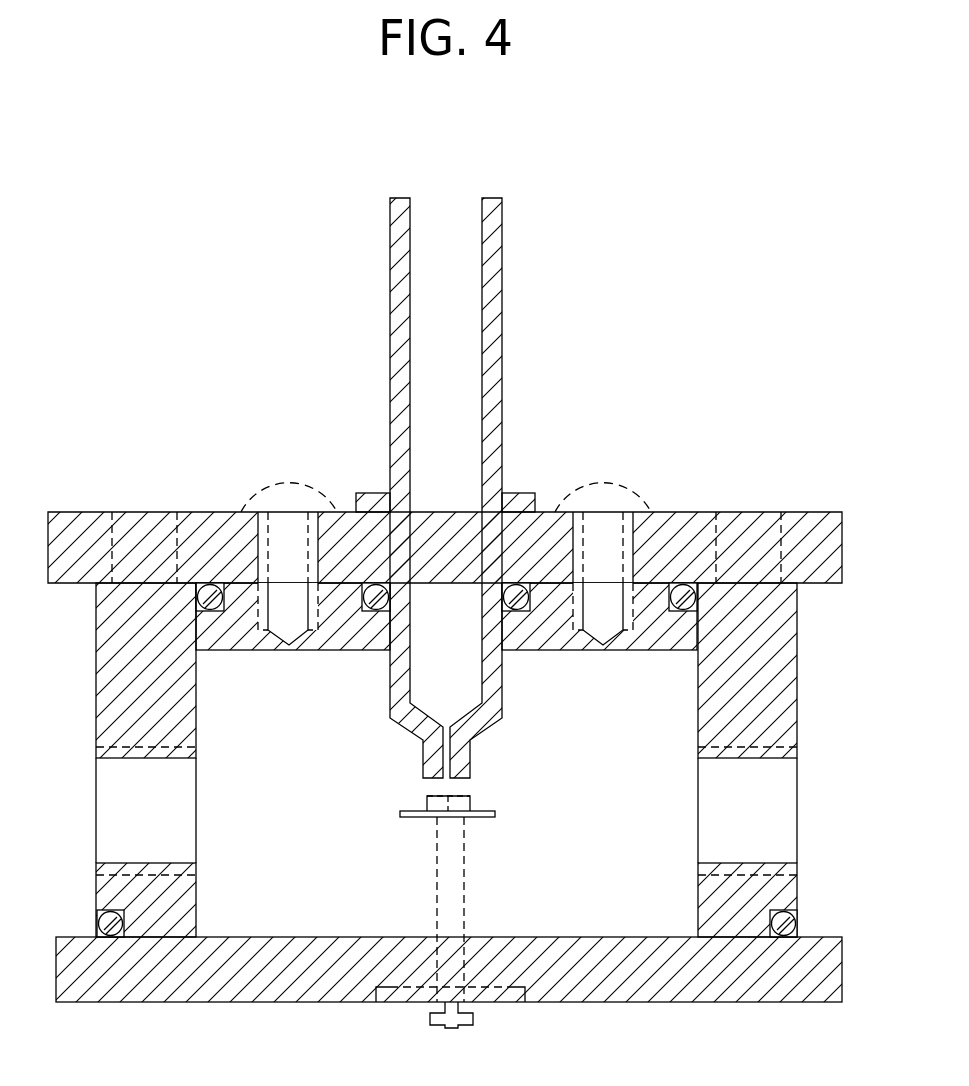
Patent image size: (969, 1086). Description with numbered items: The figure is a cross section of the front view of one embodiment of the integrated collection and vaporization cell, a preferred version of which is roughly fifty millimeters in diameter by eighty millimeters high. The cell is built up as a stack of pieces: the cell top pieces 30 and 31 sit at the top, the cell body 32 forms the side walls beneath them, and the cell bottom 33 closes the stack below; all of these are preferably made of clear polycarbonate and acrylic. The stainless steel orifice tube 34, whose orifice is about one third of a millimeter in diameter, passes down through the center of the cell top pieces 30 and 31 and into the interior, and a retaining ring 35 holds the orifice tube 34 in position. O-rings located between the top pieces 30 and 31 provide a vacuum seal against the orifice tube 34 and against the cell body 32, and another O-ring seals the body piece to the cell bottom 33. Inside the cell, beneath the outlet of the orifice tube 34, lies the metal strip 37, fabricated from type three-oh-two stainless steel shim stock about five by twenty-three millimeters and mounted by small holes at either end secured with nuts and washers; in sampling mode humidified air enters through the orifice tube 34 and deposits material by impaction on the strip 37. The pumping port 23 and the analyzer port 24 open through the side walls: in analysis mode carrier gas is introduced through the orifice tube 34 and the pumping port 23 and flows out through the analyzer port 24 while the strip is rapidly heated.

The pumping port 23 is at (772, 861).
The analyzer port 24 is at (119, 862).
The cell top piece 30 is at (815, 511).
The cell top piece 31 is at (698, 628).
The cell body 32 is at (798, 684).
The cell bottom 33 is at (842, 962).
The orifice tube 34 is at (505, 366).
The retaining ring 35 is at (522, 493).
The metal strip 37 is at (418, 808).